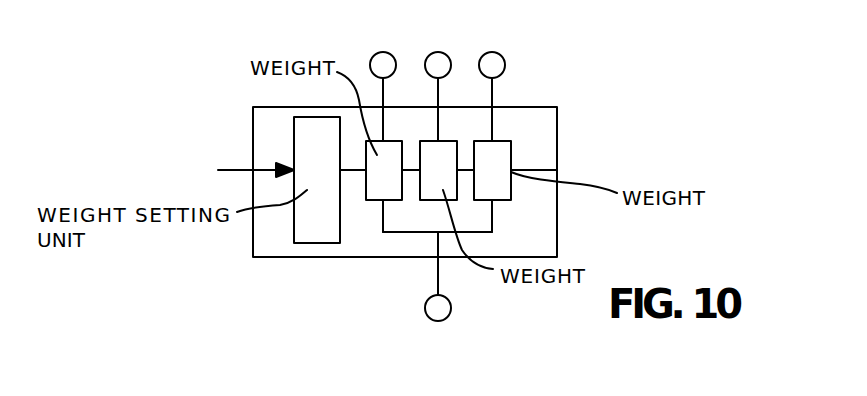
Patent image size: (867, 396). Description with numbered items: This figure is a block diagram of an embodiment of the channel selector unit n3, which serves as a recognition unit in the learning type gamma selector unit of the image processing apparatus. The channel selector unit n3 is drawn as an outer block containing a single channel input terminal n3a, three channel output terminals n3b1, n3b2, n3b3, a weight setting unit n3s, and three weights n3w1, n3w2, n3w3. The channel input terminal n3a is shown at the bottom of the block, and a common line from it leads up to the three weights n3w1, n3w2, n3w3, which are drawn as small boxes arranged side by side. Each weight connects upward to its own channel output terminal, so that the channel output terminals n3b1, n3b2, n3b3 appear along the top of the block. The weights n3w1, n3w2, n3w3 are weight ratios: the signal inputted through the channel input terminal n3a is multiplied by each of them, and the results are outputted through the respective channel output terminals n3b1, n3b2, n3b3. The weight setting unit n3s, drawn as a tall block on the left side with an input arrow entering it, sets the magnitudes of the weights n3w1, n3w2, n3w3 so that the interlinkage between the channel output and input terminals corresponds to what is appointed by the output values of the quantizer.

The channel selector unit n3 is at (557, 128).
The weight setting unit n3s is at (294, 126).
The channel output terminal n3b1 is at (393, 56).
The channel output terminal n3b2 is at (449, 66).
The channel output terminal n3b3 is at (502, 54).
The weight n3w1 is at (388, 200).
The weight n3w2 is at (453, 197).
The weight n3w3 is at (505, 170).
The channel input terminal n3a is at (451, 308).